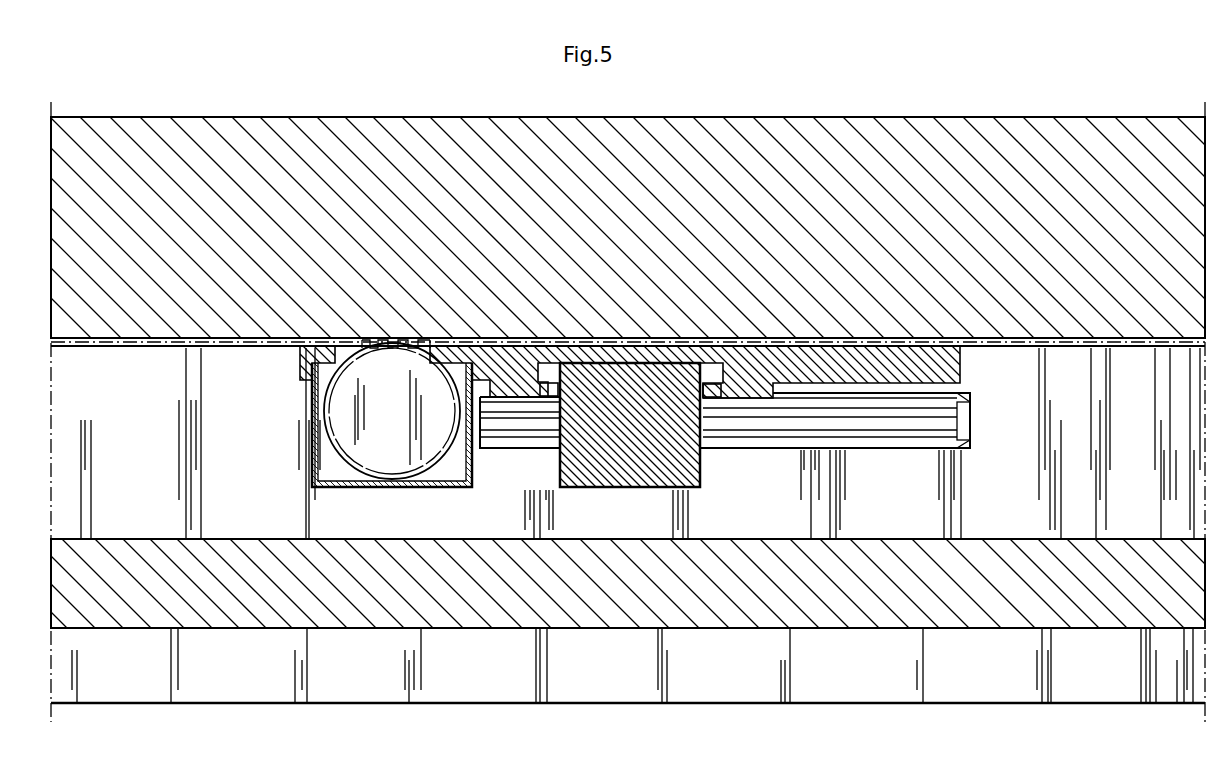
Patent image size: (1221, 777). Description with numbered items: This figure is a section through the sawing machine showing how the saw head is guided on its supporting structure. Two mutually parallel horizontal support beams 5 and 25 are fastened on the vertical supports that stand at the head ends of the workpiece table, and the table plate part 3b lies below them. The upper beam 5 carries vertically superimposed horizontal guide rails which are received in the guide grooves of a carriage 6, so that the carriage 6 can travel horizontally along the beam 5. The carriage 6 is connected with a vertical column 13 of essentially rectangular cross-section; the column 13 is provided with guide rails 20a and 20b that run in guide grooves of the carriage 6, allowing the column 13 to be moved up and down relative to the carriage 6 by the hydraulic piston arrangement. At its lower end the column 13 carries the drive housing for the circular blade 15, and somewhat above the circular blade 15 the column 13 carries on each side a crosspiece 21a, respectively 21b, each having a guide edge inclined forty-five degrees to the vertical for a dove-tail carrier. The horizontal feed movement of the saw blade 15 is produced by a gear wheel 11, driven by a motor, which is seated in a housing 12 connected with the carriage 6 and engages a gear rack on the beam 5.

The support beam 5 is at (171, 126).
The support beam 25 is at (92, 582).
The table plate part 3b is at (260, 537).
The housing 12 is at (324, 458).
The gear wheel 11 is at (388, 450).
The column 13 is at (615, 465).
The circular blade 15 is at (771, 396).
The guide rail 20a is at (547, 386).
The guide rail 20b is at (712, 392).
The crosspiece 21a is at (500, 422).
The crosspiece 21b is at (946, 421).
The carriage 6 is at (865, 431).